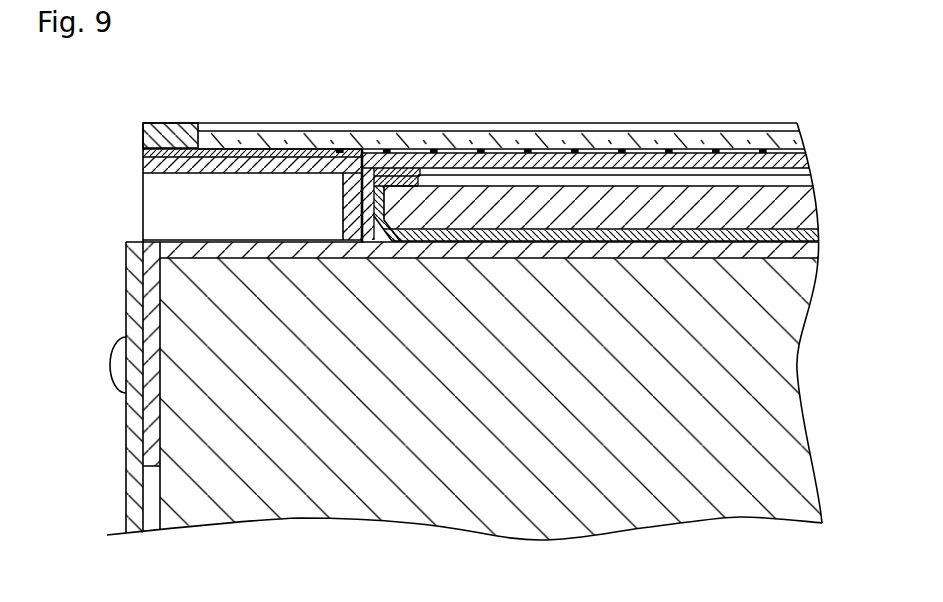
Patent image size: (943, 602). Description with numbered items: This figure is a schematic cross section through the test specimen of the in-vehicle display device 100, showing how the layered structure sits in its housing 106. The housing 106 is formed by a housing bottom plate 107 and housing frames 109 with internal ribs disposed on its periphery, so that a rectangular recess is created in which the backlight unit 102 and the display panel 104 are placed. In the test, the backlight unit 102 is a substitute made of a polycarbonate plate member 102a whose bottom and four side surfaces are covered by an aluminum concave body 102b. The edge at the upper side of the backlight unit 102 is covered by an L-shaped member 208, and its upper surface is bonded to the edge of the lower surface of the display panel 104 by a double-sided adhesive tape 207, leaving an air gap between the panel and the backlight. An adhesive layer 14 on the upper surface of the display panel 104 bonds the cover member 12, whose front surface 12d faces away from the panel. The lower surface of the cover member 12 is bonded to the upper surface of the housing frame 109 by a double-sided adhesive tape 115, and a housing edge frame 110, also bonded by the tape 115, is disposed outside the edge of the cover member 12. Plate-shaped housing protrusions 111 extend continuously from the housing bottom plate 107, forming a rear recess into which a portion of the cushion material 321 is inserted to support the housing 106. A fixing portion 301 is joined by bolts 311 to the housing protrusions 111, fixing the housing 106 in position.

The in-vehicle display device 100 is at (135, 103).
The housing edge frame 110 is at (175, 135).
The double-sided adhesive tape 115 is at (233, 147).
The housing frame 109 is at (291, 160).
The housing 106 is at (127, 160).
The L-shaped member 208 is at (373, 178).
The double-sided adhesive tape 207 is at (397, 172).
The housing bottom plate 107 is at (456, 250).
The cover member 12 is at (500, 142).
The adhesive layer 14 is at (543, 150).
The display panel 104 is at (590, 158).
The backlight unit 102 is at (622, 205).
The front surface 12d is at (703, 135).
The concave body 102b is at (742, 228).
The plate member 102a is at (775, 205).
The housing protrusion 111 is at (150, 292).
The bolt 311 is at (120, 360).
The fixing portion 301 is at (137, 512).
The cushion material 321 is at (346, 502).